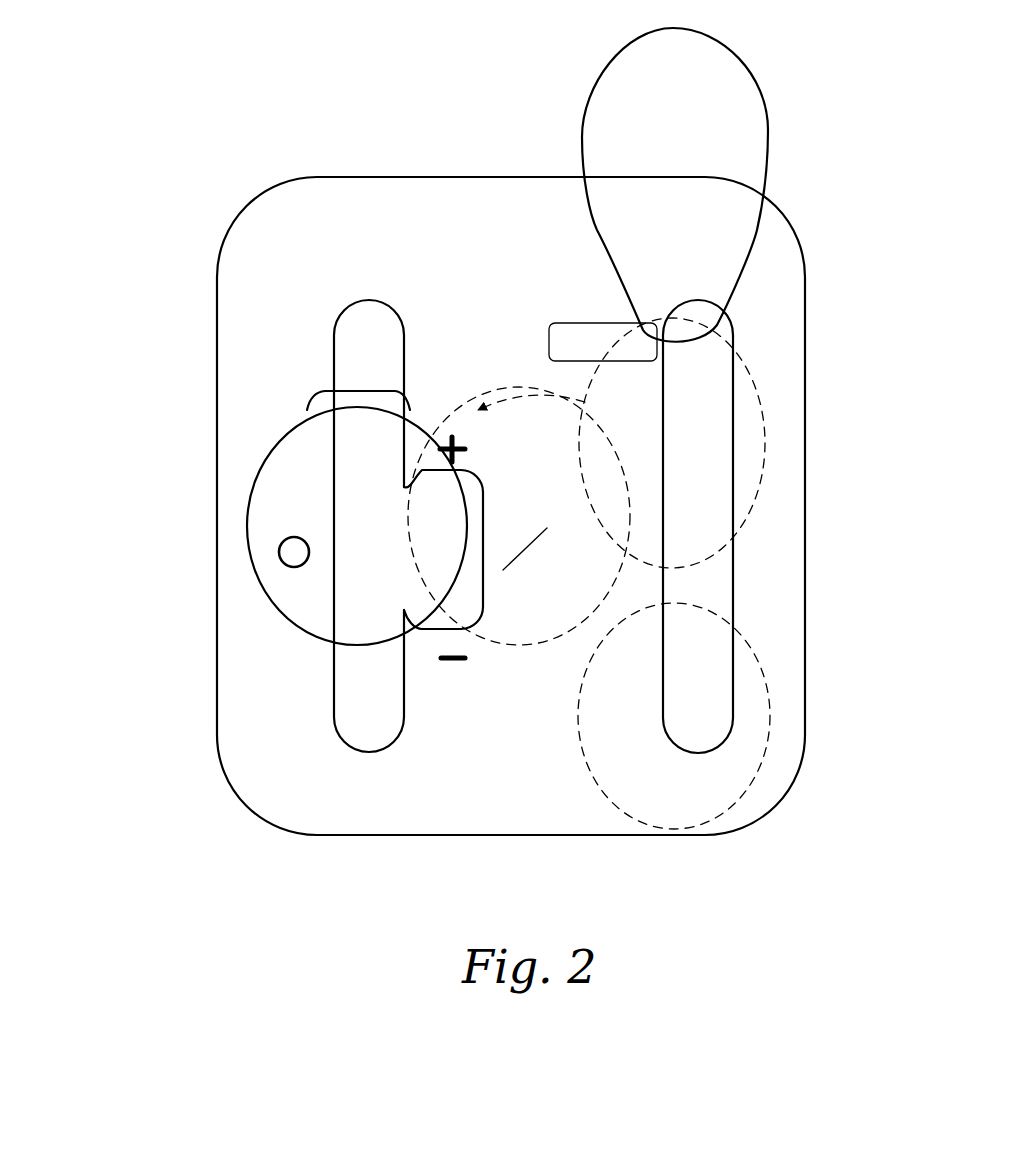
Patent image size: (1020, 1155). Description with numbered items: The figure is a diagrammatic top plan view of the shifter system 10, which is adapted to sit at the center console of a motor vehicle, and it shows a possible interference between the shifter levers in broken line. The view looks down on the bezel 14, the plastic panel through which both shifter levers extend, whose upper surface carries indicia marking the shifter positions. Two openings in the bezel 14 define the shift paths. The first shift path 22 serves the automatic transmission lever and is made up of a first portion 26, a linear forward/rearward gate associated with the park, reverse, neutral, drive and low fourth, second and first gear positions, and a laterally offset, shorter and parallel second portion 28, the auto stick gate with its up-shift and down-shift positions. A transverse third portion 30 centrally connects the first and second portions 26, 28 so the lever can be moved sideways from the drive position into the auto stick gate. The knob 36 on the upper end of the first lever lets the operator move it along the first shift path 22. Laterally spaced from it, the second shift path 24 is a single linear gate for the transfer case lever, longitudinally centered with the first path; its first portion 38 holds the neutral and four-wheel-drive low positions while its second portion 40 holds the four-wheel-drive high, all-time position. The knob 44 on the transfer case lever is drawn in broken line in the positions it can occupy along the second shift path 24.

The shifter system 10 is at (473, 461).
The bezel 14 is at (240, 215).
The first shift path 22 is at (378, 290).
The second shift path 24 is at (742, 318).
The first portion 26 is at (336, 343).
The second portion 28 is at (483, 497).
The third portion 30 is at (412, 612).
The knob 36 is at (252, 565).
The first portion 38 is at (735, 392).
The second portion 40 is at (735, 588).
The knob 44 is at (617, 52).